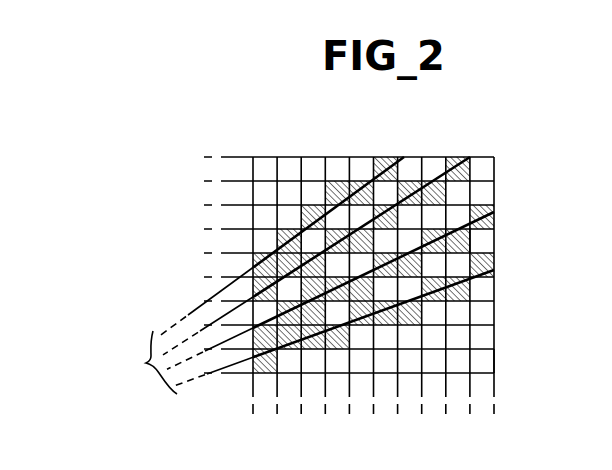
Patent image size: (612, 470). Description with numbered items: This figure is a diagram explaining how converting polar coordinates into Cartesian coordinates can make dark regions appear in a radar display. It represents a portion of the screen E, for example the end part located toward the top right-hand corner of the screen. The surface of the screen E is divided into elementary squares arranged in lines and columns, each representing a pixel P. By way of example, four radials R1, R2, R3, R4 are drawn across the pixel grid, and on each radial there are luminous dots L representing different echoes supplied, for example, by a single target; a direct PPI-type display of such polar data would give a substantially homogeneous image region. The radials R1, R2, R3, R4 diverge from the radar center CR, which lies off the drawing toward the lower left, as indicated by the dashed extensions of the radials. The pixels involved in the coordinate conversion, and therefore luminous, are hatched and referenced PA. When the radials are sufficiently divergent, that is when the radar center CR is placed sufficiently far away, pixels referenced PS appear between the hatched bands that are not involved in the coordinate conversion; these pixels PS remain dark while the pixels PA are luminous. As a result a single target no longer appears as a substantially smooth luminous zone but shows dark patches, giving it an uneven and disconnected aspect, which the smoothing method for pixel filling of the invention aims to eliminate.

The pixels P is at (287, 168).
The dark pixels not involved in the coordinate conversion PS is at (471, 194).
The luminous pixels involved in the coordinate conversion PA is at (253, 250).
The first radial R1 is at (373, 177).
The second radial R2 is at (430, 176).
The third radial R3 is at (415, 218).
The fourth radial R4 is at (472, 285).
The luminous dots L is at (474, 246).
The screen E is at (494, 372).
The radar center CR is at (126, 359).